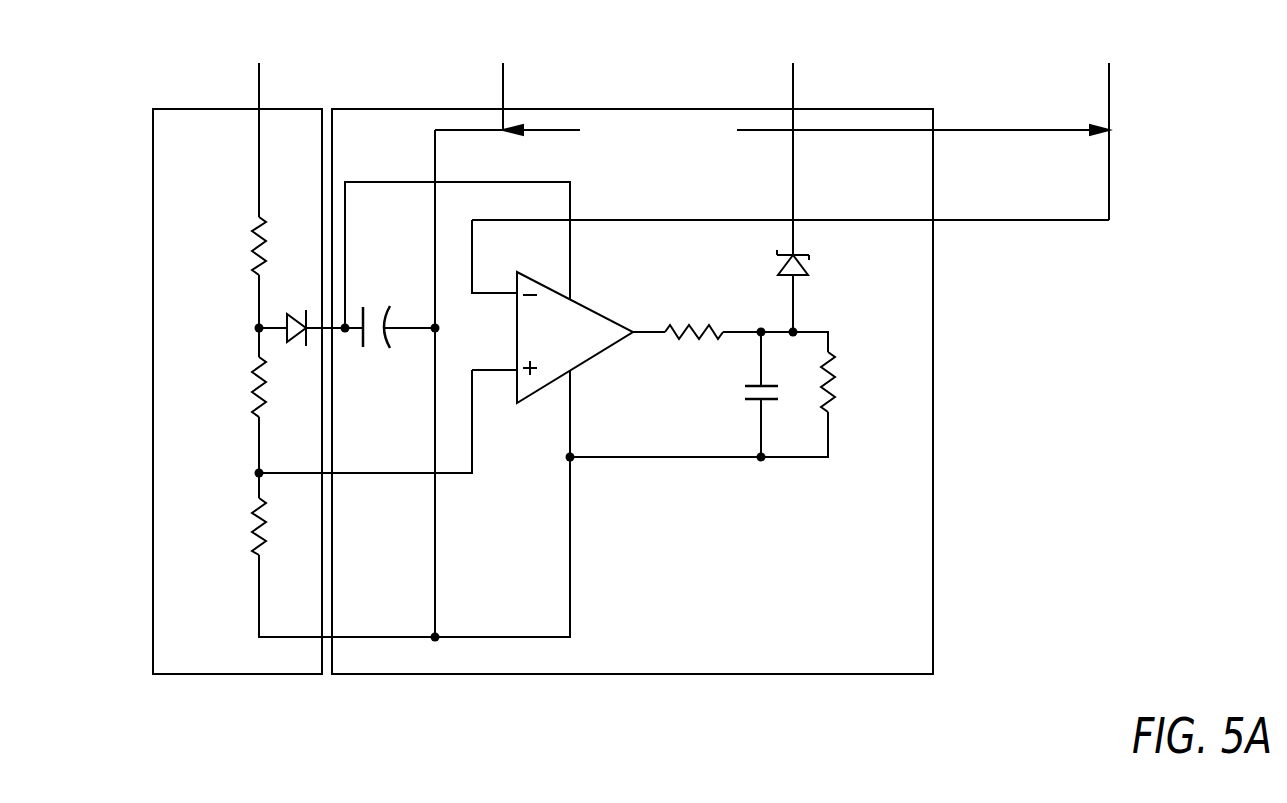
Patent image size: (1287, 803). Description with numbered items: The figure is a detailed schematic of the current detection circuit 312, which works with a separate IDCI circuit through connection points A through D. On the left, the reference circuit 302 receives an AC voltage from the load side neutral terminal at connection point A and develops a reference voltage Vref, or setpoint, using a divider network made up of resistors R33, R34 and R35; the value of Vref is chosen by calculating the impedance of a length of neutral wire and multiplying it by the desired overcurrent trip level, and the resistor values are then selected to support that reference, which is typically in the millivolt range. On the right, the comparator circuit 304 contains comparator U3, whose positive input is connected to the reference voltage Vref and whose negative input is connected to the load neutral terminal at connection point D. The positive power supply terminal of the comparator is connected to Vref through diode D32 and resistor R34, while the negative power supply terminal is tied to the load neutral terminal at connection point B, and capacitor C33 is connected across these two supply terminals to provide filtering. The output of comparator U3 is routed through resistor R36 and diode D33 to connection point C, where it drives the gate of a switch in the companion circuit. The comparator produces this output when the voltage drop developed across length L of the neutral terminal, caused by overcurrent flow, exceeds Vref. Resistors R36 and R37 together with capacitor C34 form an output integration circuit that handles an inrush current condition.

The reference circuit 302 is at (148, 530).
The comparator circuit 304 is at (933, 612).
The current detection circuit 312 is at (574, 395).
The resistor R33 is at (255, 250).
The resistor R34 is at (255, 390).
The resistor R35 is at (255, 517).
The reference voltage Vref is at (253, 468).
The diode D32 is at (296, 312).
The capacitor C33 is at (372, 350).
The comparator U3 is at (575, 335).
The resistor R36 is at (687, 325).
The capacitor C34 is at (737, 392).
The diode D33 is at (808, 275).
The resistor R37 is at (835, 383).